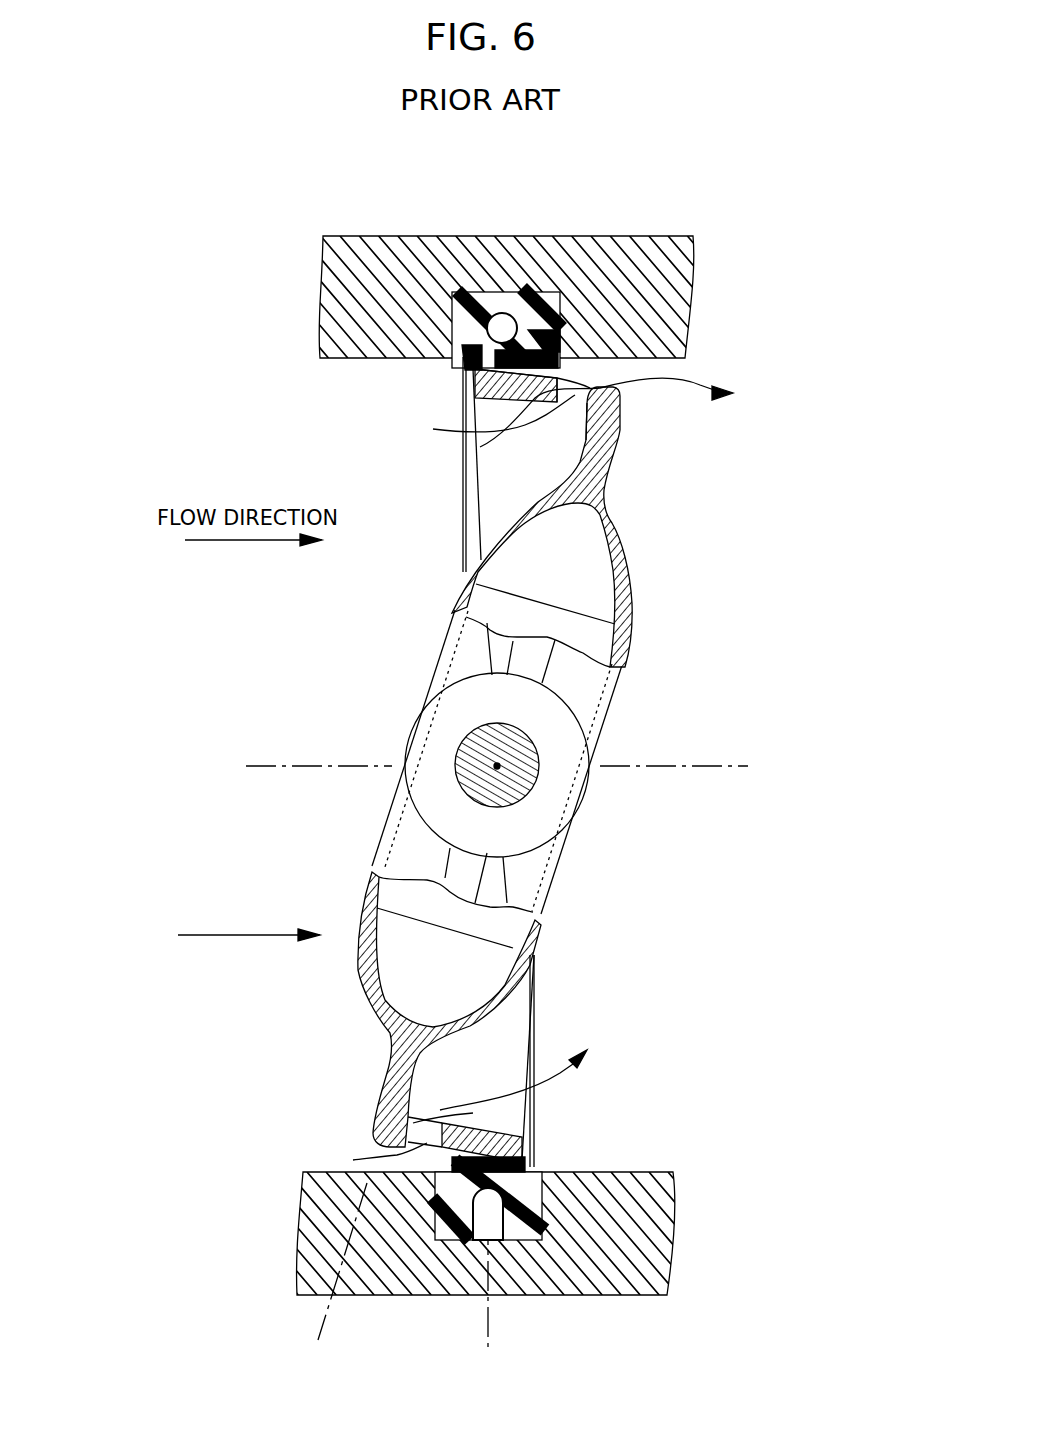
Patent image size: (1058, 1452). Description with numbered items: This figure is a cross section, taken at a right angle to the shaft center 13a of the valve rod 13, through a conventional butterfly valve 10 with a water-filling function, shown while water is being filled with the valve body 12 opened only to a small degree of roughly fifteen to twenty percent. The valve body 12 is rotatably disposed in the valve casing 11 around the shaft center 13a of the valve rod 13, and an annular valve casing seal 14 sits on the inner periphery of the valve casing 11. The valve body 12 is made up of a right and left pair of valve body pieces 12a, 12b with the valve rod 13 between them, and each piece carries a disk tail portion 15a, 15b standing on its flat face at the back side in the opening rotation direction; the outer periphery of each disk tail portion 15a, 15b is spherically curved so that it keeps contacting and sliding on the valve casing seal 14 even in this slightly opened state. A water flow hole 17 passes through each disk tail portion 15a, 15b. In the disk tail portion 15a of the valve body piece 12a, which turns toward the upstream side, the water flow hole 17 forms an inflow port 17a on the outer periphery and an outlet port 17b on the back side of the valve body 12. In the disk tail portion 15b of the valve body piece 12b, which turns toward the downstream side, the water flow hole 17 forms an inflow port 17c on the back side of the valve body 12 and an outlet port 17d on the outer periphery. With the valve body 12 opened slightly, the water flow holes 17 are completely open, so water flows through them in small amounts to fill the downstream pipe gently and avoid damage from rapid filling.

The butterfly valve 10 is at (365, 640).
The valve casing 11 is at (352, 327).
The valve body 12 is at (500, 779).
The valve body piece 12a is at (360, 907).
The valve body piece 12b is at (500, 523).
The valve rod 13 is at (470, 756).
The shaft center 13a is at (500, 766).
The valve casing seal 14 is at (475, 380).
The disk tail portion 15a is at (535, 1130).
The disk tail portion 15b is at (470, 448).
The water flow hole 17 is at (575, 410).
The inflow port 17a is at (417, 1160).
The outlet port 17b is at (473, 1113).
The inflow port 17c is at (620, 441).
The outlet port 17d is at (577, 397).